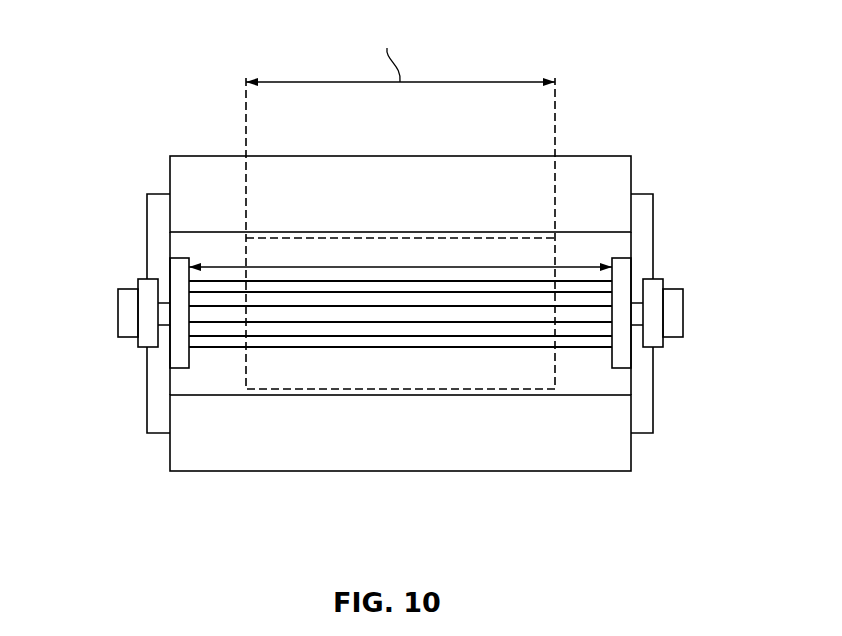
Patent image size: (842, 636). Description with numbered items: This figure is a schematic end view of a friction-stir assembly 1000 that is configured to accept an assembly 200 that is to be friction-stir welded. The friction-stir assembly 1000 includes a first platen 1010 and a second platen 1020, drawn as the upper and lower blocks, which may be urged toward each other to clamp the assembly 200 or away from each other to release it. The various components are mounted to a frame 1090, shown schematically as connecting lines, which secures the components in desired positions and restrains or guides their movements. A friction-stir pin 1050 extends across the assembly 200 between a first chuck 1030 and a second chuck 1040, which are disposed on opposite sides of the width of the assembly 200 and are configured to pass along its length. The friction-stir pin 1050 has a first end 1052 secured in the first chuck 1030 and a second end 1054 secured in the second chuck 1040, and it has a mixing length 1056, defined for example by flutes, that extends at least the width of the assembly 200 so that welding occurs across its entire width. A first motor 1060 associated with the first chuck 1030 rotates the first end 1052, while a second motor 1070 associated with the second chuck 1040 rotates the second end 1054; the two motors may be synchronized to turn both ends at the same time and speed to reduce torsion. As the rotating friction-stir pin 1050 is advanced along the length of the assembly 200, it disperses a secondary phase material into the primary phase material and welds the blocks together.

The friction-stir assembly 1000 is at (200, 70).
The assembly 200 is at (557, 258).
The first platen 1010 is at (402, 173).
The second platen 1020 is at (420, 453).
The frame 1090 is at (147, 222).
The first chuck 1030 is at (143, 349).
The first motor 1060 is at (118, 313).
The second chuck 1040 is at (653, 347).
The second motor 1070 is at (684, 313).
The first end 1052 is at (165, 327).
The second end 1054 is at (635, 303).
The friction-stir pin 1050 is at (582, 347).
The mixing length 1056 is at (475, 267).